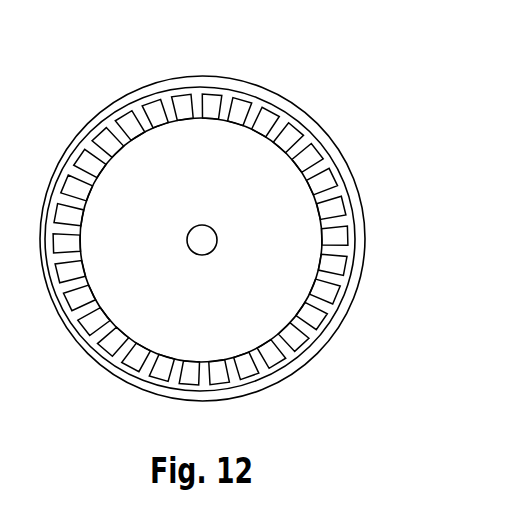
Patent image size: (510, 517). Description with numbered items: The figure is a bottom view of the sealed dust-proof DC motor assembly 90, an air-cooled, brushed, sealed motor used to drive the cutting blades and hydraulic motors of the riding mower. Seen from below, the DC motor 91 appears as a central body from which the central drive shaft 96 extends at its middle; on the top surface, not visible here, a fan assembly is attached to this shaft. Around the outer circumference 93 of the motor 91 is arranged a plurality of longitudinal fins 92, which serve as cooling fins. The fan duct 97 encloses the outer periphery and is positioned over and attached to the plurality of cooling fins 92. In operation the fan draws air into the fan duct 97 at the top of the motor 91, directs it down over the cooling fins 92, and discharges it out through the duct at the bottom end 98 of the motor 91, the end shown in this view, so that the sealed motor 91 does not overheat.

The sealed dust-proof DC motor assembly 90 is at (183, 53).
The DC motor 91 is at (254, 203).
The longitudinal fins 92 is at (270, 117).
The outer circumference 93 is at (222, 108).
The central drive shaft 96 is at (205, 240).
The fan duct 97 is at (345, 167).
The bottom end 98 is at (141, 178).